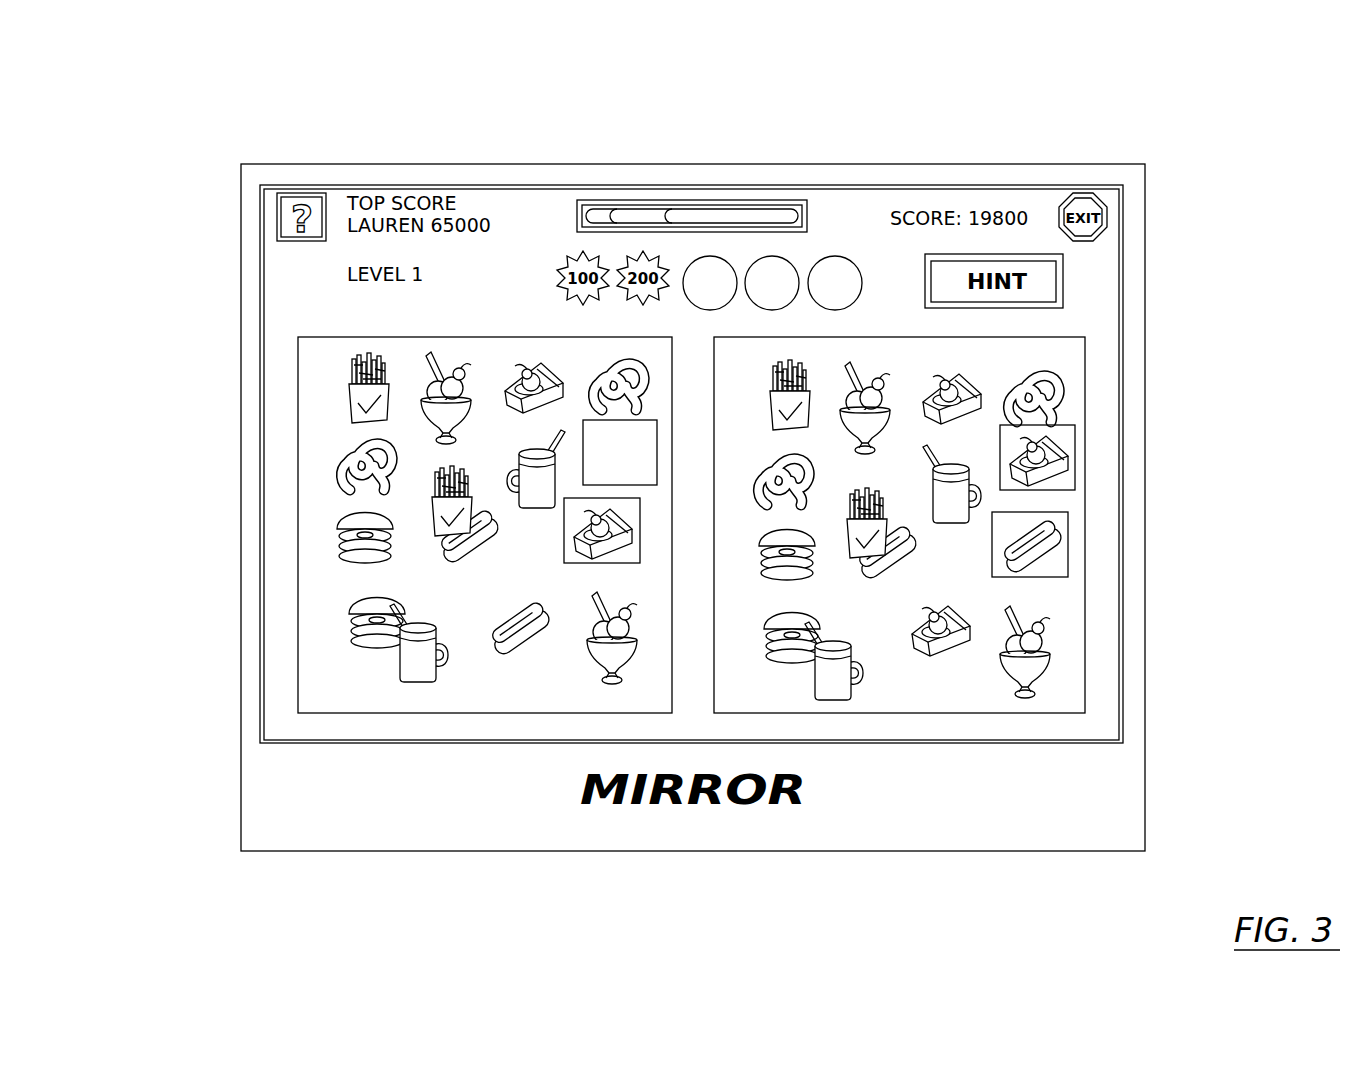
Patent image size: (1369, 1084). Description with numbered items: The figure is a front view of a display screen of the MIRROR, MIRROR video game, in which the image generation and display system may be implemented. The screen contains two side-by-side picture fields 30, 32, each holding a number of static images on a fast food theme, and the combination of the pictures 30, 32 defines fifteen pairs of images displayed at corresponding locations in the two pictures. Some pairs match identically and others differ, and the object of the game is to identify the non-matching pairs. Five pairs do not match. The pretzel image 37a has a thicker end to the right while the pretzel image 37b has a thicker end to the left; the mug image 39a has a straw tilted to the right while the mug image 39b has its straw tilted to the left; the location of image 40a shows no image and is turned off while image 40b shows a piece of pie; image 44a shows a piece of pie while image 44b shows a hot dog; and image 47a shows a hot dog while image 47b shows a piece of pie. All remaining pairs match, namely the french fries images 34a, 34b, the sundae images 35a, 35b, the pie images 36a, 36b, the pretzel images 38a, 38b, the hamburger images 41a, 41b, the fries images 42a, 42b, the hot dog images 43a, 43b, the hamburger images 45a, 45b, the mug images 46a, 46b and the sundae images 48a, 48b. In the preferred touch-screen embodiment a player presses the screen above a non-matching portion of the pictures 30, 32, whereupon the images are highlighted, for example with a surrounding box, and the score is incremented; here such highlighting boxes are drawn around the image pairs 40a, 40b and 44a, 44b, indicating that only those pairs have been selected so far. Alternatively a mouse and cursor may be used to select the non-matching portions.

The picture field 30 is at (331, 367).
The picture field 32 is at (746, 367).
The image 34a is at (345, 398).
The image 35a is at (457, 352).
The image 36a is at (538, 357).
The image 37a is at (633, 350).
The image 38a is at (338, 460).
The image 39a is at (515, 462).
The image 40a is at (583, 420).
The image 41a is at (340, 528).
The image 42a is at (430, 505).
The image 43a is at (465, 560).
The image 44a is at (572, 563).
The image 45a is at (347, 610).
The image 46a is at (422, 682).
The image 47a is at (513, 652).
The image 48a is at (613, 684).
The image 34b is at (790, 360).
The image 35b is at (853, 364).
The image 36b is at (957, 370).
The image 37b is at (1065, 382).
The image 38b is at (765, 447).
The image 39b is at (982, 480).
The image 40b is at (1075, 455).
The image 41b is at (760, 582).
The image 42b is at (893, 490).
The image 43b is at (885, 576).
The image 44b is at (1068, 558).
The image 45b is at (793, 665).
The image 46b is at (845, 700).
The image 47b is at (930, 656).
The image 48b is at (1028, 698).